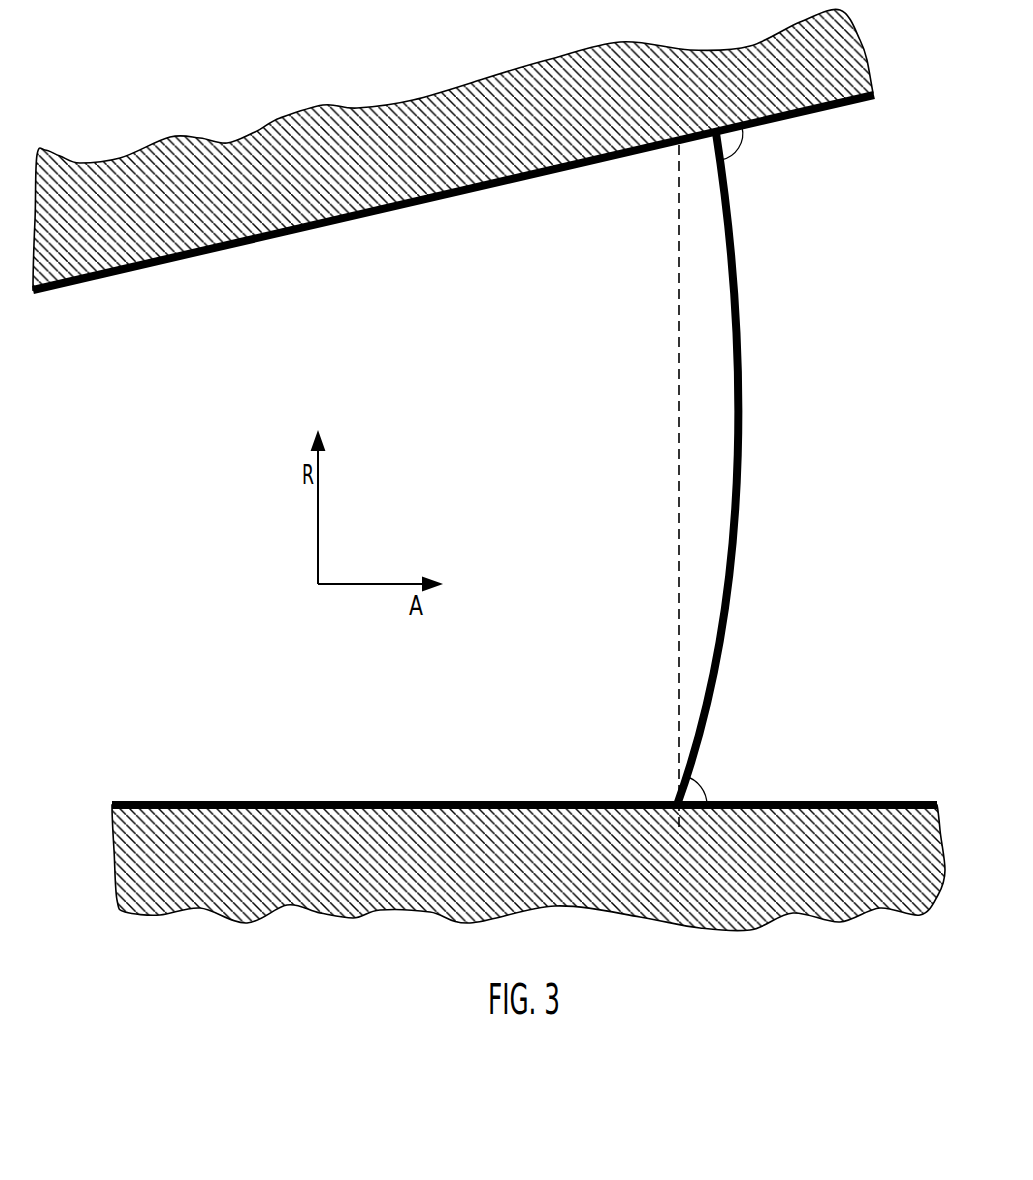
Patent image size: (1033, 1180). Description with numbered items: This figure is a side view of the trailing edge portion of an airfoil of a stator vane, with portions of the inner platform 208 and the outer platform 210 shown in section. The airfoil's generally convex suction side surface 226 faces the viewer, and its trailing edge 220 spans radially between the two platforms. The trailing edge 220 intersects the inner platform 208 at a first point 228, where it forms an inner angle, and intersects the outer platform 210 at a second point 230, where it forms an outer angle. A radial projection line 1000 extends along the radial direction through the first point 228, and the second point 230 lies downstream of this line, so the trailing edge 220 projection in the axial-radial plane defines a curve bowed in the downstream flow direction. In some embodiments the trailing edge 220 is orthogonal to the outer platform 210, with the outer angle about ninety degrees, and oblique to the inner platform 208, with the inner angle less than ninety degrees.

The inner platform 208 is at (844, 826).
The outer platform 210 is at (822, 103).
The trailing edge 220 is at (734, 560).
The suction side surface 226 is at (514, 336).
The first point 228 is at (676, 800).
The second point 230 is at (712, 140).
The radial projection line 1000 is at (679, 484).